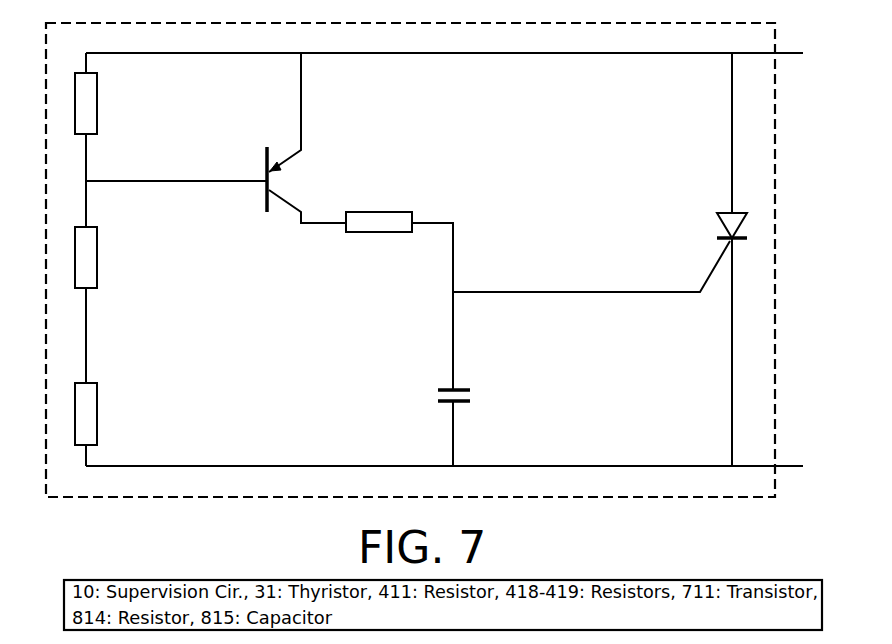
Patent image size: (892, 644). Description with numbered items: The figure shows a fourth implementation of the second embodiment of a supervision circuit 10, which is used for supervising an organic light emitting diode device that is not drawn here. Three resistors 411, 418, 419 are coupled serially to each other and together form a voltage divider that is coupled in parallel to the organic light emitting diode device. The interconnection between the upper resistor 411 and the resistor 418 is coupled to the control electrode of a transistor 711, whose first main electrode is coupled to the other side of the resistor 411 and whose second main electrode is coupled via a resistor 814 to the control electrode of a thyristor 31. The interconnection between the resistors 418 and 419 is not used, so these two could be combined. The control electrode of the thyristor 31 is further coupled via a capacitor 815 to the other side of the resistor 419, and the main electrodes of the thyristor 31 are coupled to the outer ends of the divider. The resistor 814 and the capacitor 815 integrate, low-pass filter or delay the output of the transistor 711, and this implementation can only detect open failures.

The supervision circuit 10 is at (700, 497).
The thyristor 31 is at (720, 230).
The resistor 411 is at (98, 104).
The resistor 418 is at (98, 254).
The resistor 419 is at (98, 410).
The transistor 711 is at (287, 177).
The resistor 814 is at (378, 233).
The capacitor 815 is at (472, 397).